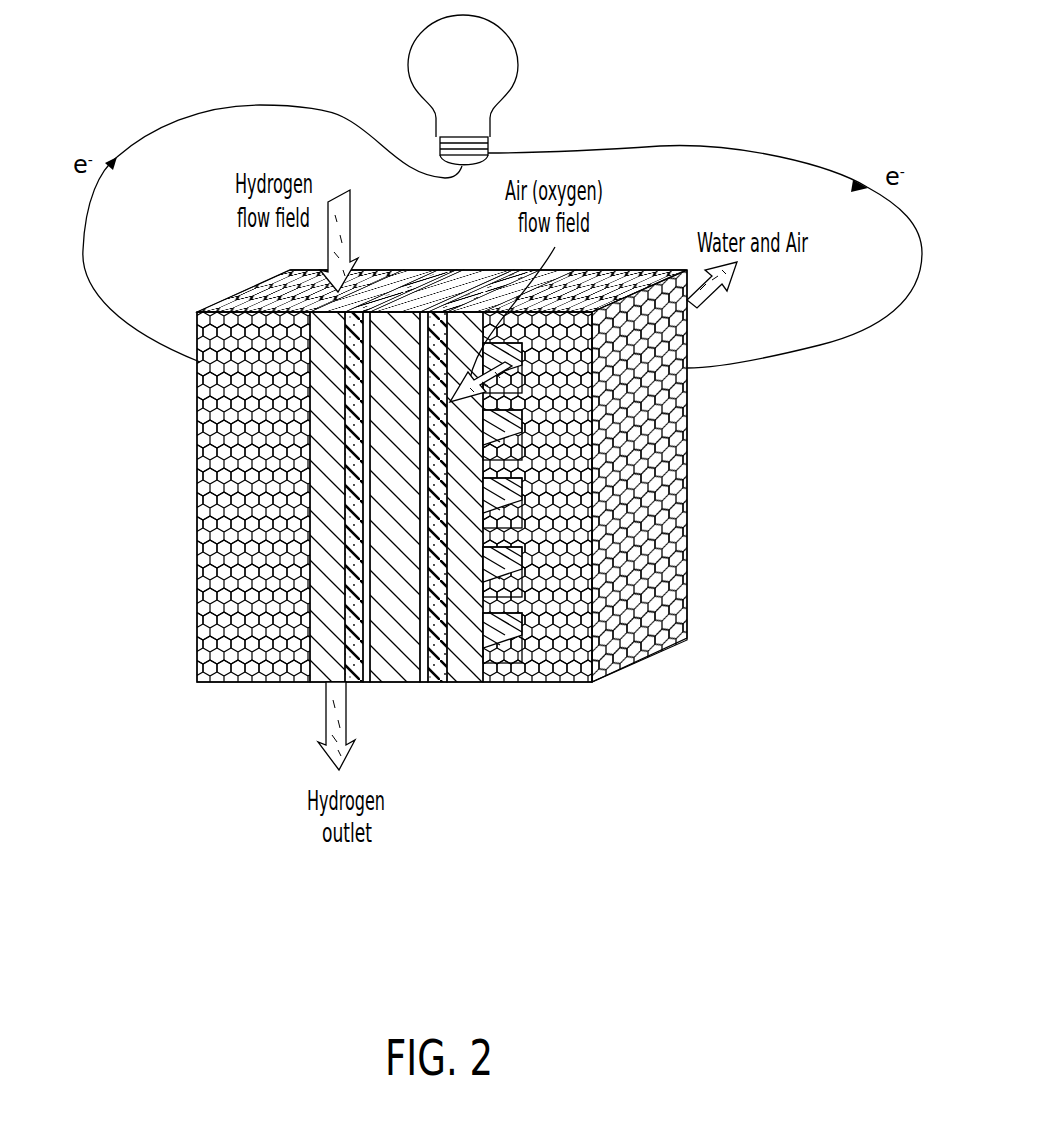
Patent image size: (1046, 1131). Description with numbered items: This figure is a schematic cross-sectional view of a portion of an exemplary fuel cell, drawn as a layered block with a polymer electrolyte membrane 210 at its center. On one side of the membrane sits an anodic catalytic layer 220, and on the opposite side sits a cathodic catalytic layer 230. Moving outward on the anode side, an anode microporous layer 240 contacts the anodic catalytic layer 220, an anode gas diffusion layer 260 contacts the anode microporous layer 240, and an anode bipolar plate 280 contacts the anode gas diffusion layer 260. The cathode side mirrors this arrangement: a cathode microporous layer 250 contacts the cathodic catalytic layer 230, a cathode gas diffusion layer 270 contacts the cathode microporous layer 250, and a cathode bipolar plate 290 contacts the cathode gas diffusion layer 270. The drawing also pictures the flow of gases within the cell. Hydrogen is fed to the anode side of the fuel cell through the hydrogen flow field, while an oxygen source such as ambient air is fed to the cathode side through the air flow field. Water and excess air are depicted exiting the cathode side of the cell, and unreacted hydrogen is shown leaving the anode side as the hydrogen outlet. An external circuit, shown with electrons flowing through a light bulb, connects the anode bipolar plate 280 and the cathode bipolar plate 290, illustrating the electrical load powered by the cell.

The polymer electrolyte membrane 210 is at (392, 653).
The anodic catalytic layer 220 is at (368, 633).
The cathodic catalytic layer 230 is at (423, 655).
The anode microporous layer 240 is at (352, 682).
The cathode microporous layer 250 is at (442, 660).
The anode gas diffusion layer 260 is at (337, 613).
The cathode gas diffusion layer 270 is at (550, 682).
The anode bipolar plate 280 is at (197, 452).
The cathode bipolar plate 290 is at (650, 482).